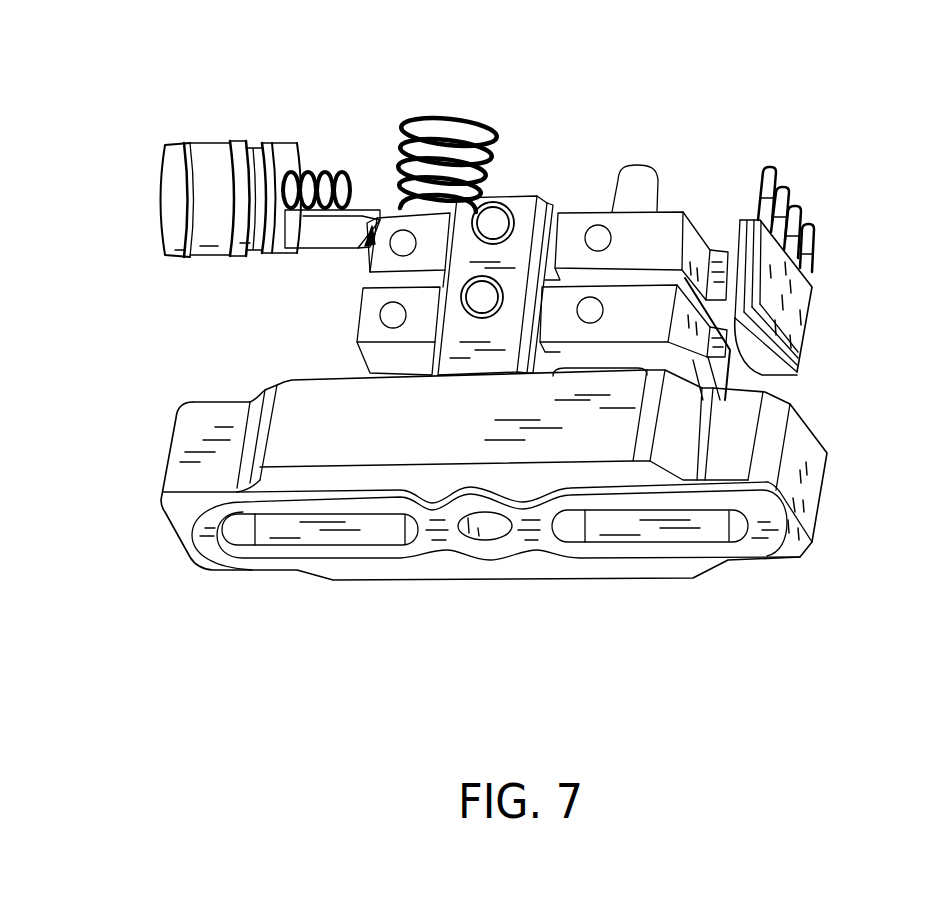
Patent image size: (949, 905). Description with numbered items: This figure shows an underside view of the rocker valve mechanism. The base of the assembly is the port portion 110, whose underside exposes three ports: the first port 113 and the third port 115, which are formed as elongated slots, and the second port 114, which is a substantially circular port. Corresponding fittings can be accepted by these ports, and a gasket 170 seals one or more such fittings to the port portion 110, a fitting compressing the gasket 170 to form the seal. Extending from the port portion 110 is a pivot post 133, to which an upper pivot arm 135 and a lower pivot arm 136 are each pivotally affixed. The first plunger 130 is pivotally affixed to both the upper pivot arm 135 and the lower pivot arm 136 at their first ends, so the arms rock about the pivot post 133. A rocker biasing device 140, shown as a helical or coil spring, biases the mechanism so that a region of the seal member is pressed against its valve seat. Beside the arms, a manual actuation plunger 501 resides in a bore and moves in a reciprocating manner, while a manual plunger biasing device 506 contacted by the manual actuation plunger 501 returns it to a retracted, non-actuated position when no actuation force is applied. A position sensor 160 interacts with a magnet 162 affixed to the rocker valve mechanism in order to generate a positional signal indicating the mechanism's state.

The port portion 110 is at (824, 510).
The first port 113 is at (297, 537).
The second port 114 is at (490, 533).
The third port 115 is at (688, 532).
The gasket 170 is at (410, 565).
The first plunger 130 is at (637, 163).
The pivot post 133 is at (517, 197).
The upper pivot arm 135 is at (695, 207).
The lower pivot arm 136 is at (357, 318).
The rocker biasing device 140 is at (432, 117).
The position sensor 160 is at (812, 328).
The magnet 162 is at (797, 375).
The manual actuation plunger 501 is at (160, 182).
The manual plunger biasing device 506 is at (325, 173).